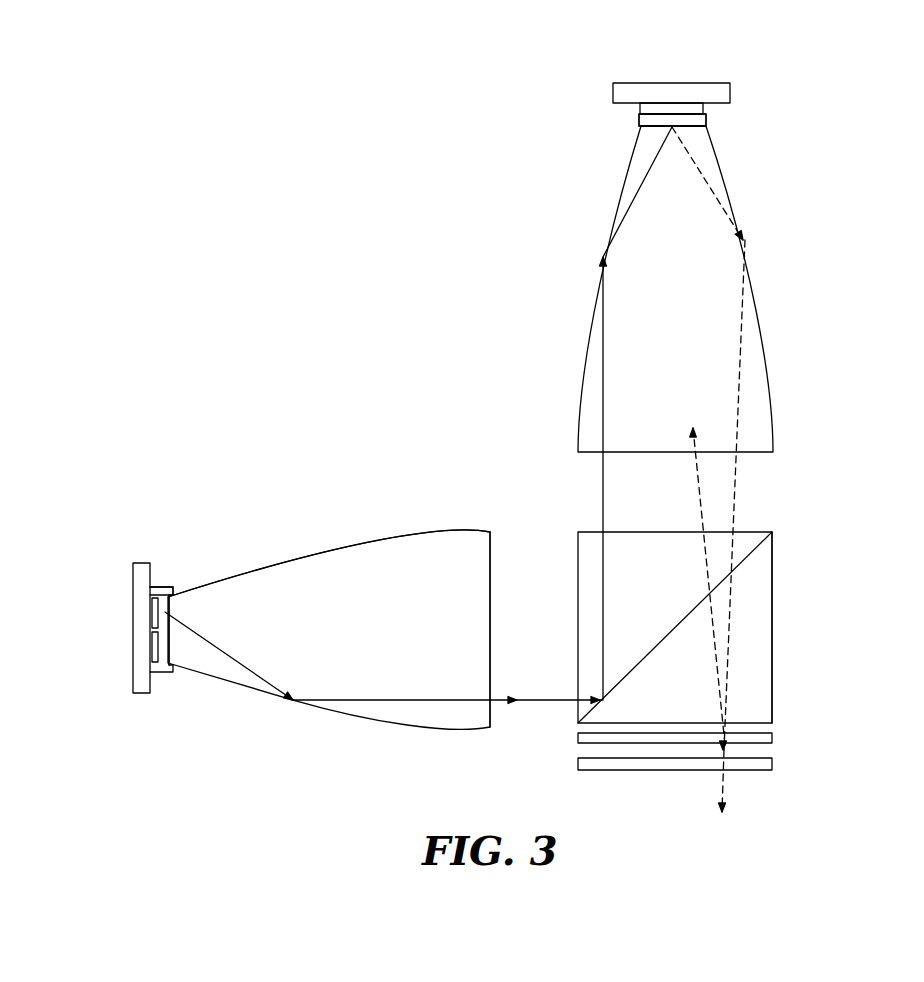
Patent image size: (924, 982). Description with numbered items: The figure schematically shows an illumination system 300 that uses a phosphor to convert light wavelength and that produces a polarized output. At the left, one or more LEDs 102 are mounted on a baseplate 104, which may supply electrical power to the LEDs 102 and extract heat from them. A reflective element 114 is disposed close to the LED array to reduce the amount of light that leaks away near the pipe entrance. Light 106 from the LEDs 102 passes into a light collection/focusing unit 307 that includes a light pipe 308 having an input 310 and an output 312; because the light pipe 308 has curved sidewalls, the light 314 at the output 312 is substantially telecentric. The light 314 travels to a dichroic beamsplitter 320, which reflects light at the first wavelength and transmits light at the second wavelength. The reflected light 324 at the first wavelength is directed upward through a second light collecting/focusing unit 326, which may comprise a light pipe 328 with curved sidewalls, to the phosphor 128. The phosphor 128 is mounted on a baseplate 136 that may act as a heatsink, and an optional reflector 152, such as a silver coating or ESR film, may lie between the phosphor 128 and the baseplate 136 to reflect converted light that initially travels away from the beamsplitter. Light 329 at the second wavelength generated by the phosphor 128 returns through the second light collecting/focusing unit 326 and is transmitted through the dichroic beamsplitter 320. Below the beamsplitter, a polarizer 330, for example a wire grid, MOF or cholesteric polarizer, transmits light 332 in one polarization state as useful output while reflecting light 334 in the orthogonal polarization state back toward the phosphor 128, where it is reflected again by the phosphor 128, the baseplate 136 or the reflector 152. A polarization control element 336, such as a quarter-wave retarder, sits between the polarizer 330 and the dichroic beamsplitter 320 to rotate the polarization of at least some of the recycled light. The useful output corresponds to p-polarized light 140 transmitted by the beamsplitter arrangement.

The illumination system 300 is at (128, 437).
The LED 102 is at (157, 614).
The baseplate 104 is at (133, 653).
The light 106 is at (242, 672).
The reflective element 114 is at (158, 590).
The phosphor 128 is at (640, 120).
The baseplate 136 is at (730, 97).
The p-polarized light 140 is at (745, 597).
The reflector 152 is at (703, 108).
The light collection/focusing unit 307 is at (325, 740).
The light pipe 308 is at (307, 552).
The input 310 is at (160, 589).
The output 312 is at (493, 552).
The light 314 is at (503, 702).
The dichroic beamsplitter 320 is at (772, 695).
The light 324 is at (575, 395).
The second light collecting/focusing unit 326 is at (788, 250).
The light pipe 328 is at (588, 307).
The light 329 is at (737, 360).
The polarizer 330 is at (772, 763).
The light 332 is at (723, 790).
The light 334 is at (703, 505).
The polarization control element 336 is at (578, 738).